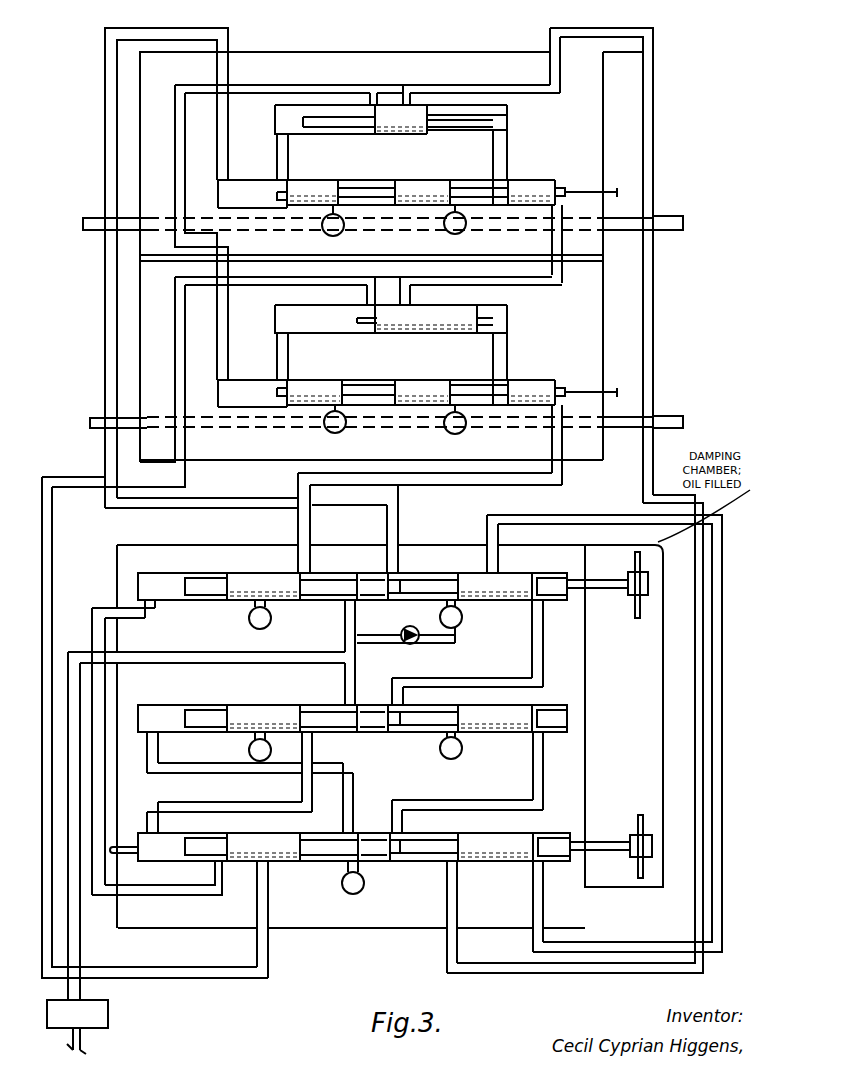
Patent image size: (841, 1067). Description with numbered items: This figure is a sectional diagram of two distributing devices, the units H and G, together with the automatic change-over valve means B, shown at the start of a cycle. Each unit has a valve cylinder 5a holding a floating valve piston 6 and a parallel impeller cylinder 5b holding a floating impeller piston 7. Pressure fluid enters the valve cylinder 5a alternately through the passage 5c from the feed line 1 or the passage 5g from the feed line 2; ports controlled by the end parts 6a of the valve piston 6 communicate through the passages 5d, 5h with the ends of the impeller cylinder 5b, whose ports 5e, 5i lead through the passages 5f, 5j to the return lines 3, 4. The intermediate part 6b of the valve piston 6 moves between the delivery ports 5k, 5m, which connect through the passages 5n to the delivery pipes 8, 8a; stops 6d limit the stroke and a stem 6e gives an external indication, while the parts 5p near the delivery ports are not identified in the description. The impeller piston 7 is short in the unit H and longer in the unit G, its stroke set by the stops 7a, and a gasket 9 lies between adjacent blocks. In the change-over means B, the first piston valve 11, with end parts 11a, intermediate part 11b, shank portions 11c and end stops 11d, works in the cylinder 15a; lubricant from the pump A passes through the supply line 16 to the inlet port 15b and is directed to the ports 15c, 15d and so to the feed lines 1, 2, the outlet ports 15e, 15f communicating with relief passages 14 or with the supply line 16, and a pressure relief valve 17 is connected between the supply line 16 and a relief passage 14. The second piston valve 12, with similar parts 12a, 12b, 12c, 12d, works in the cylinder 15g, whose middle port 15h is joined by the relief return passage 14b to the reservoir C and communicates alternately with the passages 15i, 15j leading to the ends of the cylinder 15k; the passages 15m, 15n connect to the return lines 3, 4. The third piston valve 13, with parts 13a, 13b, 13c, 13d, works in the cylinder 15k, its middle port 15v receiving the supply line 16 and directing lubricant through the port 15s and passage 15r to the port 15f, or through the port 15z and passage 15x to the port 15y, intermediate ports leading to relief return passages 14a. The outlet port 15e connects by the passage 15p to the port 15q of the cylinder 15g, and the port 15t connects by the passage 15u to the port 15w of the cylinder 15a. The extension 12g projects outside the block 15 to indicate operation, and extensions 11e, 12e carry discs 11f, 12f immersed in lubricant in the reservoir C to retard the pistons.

The feed line 1 is at (449, 482).
The feed line 2 is at (179, 38).
The return line 3 is at (620, 29).
The return line 4 is at (50, 522).
The valve cylinder 5a is at (226, 188).
The impeller cylinder 5b is at (508, 108).
The passage 5c is at (563, 240).
The passage 5d is at (508, 140).
The port 5e is at (403, 86).
The passage 5f is at (489, 84).
The passage 5g is at (223, 67).
The passage 5h is at (277, 150).
The port 5i is at (370, 96).
The passage 5j is at (177, 325).
The lubricant delivery port 5k is at (452, 210).
The lubricant delivery port 5m is at (342, 210).
The passage 5n is at (283, 224).
The cam 5p is at (339, 233).
The valve piston 6 is at (399, 179).
The end part 6a is at (421, 292).
The intermediate part 6b is at (422, 292).
The stop 6d is at (276, 194).
The stem 6e is at (610, 191).
The impeller piston 7 is at (391, 219).
The stop 7a is at (351, 119).
The delivery pipe 8 is at (673, 216).
The delivery pipe 8a is at (91, 231).
The spacer plate or gasket 9 is at (157, 264).
The floating piston valve 11 is at (465, 572).
The end part 11a is at (379, 586).
The intermediate part 11b is at (375, 577).
The reduced shank portion 11c is at (400, 592).
The end stop 11d is at (215, 592).
The extension 11e is at (600, 580).
The disc 11f is at (641, 612).
The second floating piston valve 12 is at (505, 832).
The end part 12a is at (380, 847).
The intermediate part 12b is at (370, 834).
The reduced shank portion 12c is at (425, 861).
The end stop 12d is at (203, 841).
The extension 12e is at (608, 852).
The disc 12f is at (643, 818).
The extension 12g is at (127, 862).
The third piston valve 13 is at (489, 704).
The end part 13a is at (379, 718).
The intermediate part 13b is at (372, 733).
The reduced shank portion 13c is at (333, 733).
The end stop 13d is at (215, 709).
The relief passage 14 is at (270, 621).
The relief return passage 14a is at (249, 750).
The relief return passage 14b is at (353, 894).
The block 15 is at (317, 929).
The cylinder 15a is at (182, 586).
The inlet port 15b is at (345, 632).
The port 15c is at (311, 523).
The port 15d is at (400, 525).
The outlet port 15e is at (153, 612).
The outlet port 15f is at (544, 618).
The cylinder 15g is at (162, 862).
The middle port 15h is at (360, 868).
The passage 15i is at (354, 778).
The passage 15j is at (441, 809).
The cylinder 15k is at (182, 718).
The passage 15m is at (458, 893).
The passage 15n is at (270, 885).
The passage 15p is at (100, 785).
The port 15q is at (226, 878).
The passage 15r is at (470, 681).
The port 15s is at (398, 686).
The port 15t is at (544, 893).
The passage 15u is at (655, 948).
The port 15v is at (345, 682).
The port 15w is at (499, 560).
The passage 15x is at (279, 808).
The port 15y is at (158, 820).
The port 15z is at (300, 782).
The supply line 16 is at (275, 653).
The pressure relief valve 17 is at (403, 643).
The pump A is at (110, 1012).
The automatic change-over valve means B is at (375, 931).
The reservoir or supply vessel C is at (664, 742).
The unit G is at (605, 322).
The unit H is at (604, 138).